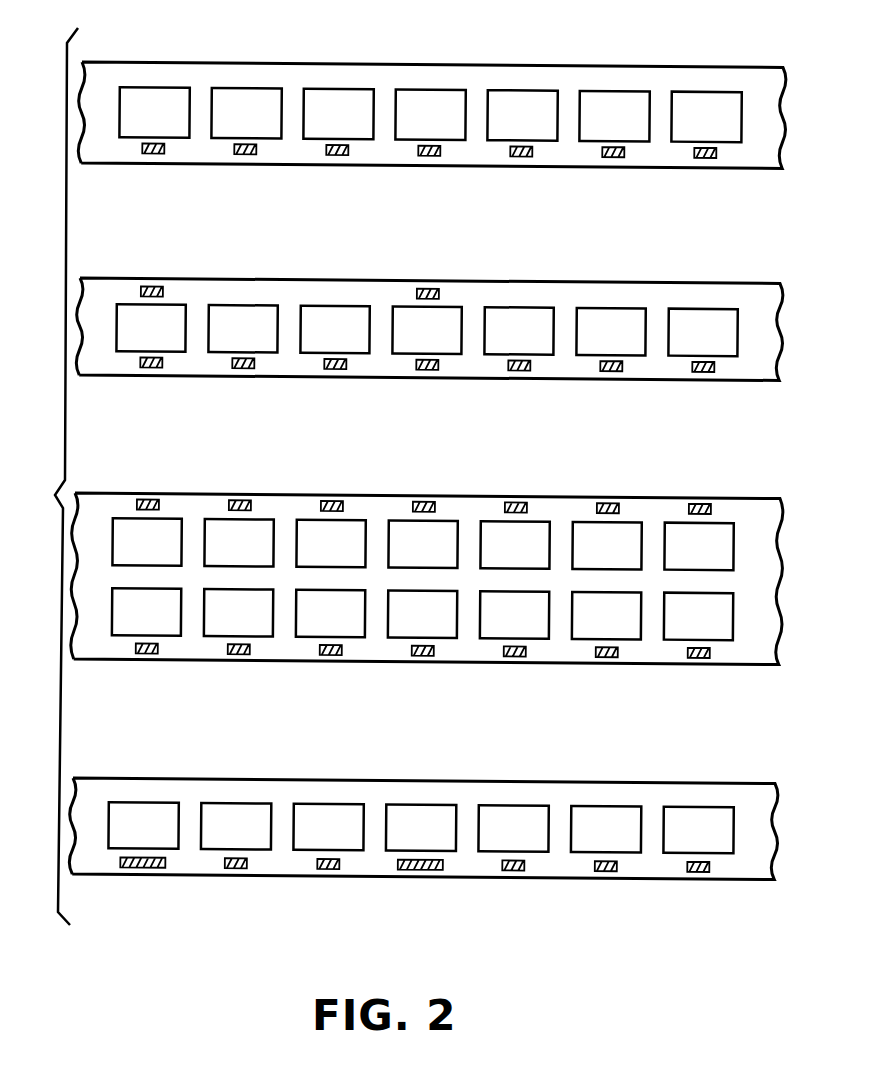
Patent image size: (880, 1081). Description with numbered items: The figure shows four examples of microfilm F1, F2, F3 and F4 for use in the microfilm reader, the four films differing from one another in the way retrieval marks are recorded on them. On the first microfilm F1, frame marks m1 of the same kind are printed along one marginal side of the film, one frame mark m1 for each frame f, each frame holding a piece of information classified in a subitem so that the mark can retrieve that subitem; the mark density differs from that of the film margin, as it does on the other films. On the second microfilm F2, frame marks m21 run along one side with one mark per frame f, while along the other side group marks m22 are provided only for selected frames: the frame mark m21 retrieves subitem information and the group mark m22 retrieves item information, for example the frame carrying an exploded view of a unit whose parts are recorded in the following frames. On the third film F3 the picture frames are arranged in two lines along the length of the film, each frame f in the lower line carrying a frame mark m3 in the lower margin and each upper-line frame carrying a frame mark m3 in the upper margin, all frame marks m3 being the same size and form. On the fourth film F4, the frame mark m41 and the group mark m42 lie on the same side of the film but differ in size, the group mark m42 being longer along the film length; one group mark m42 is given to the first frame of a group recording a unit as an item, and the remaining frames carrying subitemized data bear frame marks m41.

The first microfilm F1 is at (758, 83).
The second microfilm F2 is at (753, 300).
The third film F3 is at (755, 512).
The fourth film F4 is at (755, 795).
The frame f is at (160, 87).
The frame mark m1 is at (155, 154).
The frame mark m21 is at (152, 367).
The group mark m22 is at (148, 284).
The frame mark m3 is at (158, 498).
The frame mark m41 is at (237, 869).
The group mark m42 is at (143, 869).